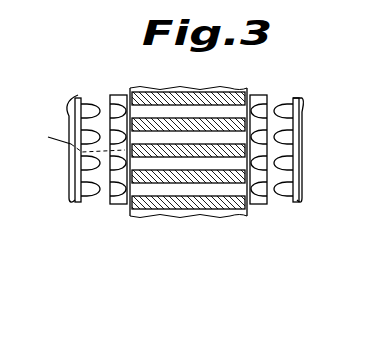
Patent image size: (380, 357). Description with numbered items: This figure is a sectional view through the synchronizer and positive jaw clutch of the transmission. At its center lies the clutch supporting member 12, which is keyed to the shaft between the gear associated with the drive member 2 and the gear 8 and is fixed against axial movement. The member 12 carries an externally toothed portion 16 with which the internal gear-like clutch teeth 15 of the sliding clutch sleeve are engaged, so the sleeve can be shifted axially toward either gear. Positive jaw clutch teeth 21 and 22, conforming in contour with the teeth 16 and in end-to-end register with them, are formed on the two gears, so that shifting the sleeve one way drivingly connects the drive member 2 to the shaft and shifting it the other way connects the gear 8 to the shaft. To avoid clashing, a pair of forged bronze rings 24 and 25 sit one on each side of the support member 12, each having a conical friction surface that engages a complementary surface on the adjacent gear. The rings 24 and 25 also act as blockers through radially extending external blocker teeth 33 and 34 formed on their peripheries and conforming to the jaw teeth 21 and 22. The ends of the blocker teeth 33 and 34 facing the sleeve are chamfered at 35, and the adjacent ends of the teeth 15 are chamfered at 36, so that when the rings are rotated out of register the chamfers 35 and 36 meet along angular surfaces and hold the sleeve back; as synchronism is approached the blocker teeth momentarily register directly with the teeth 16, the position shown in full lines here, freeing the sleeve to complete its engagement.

The drive member 2 is at (80, 135).
The gear 8 is at (302, 156).
The clutch supporting member 12 is at (184, 216).
The internal gear-like clutch teeth 15 is at (207, 178).
The externally toothed portion 16 is at (210, 138).
The positive jaw clutch teeth 21 is at (90, 110).
The positive jaw clutch teeth 22 is at (283, 190).
The forged bronze ring 24 is at (122, 205).
The forged bronze ring 25 is at (251, 202).
The blocker teeth 33 is at (72, 157).
The blocker teeth 34 is at (250, 123).
The chamfered ends 35 is at (135, 101).
The chamfered ends 36 is at (72, 179).